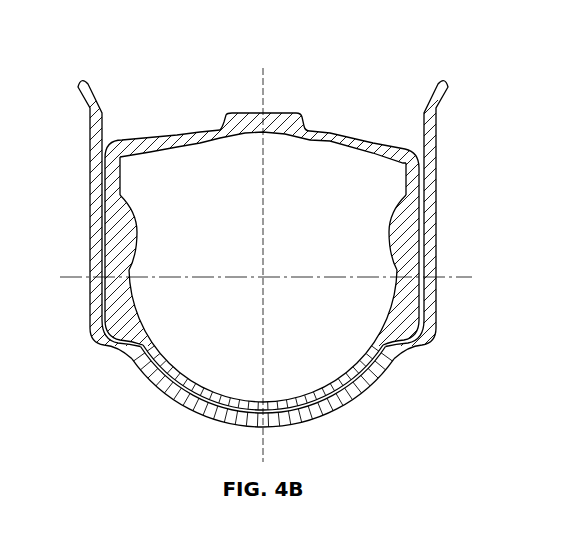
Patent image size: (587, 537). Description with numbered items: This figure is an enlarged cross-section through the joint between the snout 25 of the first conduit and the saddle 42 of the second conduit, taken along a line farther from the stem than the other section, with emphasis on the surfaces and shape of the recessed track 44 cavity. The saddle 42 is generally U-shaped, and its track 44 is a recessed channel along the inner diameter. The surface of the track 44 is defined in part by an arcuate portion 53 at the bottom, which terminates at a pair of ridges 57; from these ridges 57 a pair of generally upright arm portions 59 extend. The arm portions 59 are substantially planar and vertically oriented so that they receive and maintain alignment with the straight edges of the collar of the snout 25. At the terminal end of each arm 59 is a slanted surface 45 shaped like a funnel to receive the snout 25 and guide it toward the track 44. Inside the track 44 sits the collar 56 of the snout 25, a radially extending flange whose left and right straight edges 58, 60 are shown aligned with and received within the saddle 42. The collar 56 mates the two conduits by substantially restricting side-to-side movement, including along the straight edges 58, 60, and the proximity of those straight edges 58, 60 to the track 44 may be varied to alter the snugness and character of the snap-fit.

The snout 25 is at (241, 90).
The saddle 42 is at (104, 84).
The track 44 is at (420, 136).
The slanted surface 45 is at (435, 92).
The arcuate portion 53 is at (303, 410).
The collar 56 is at (110, 252).
The ridges 57 is at (130, 342).
The left straight edge 58 is at (110, 225).
The arm portions 59 is at (93, 150).
The right straight edge 60 is at (418, 220).